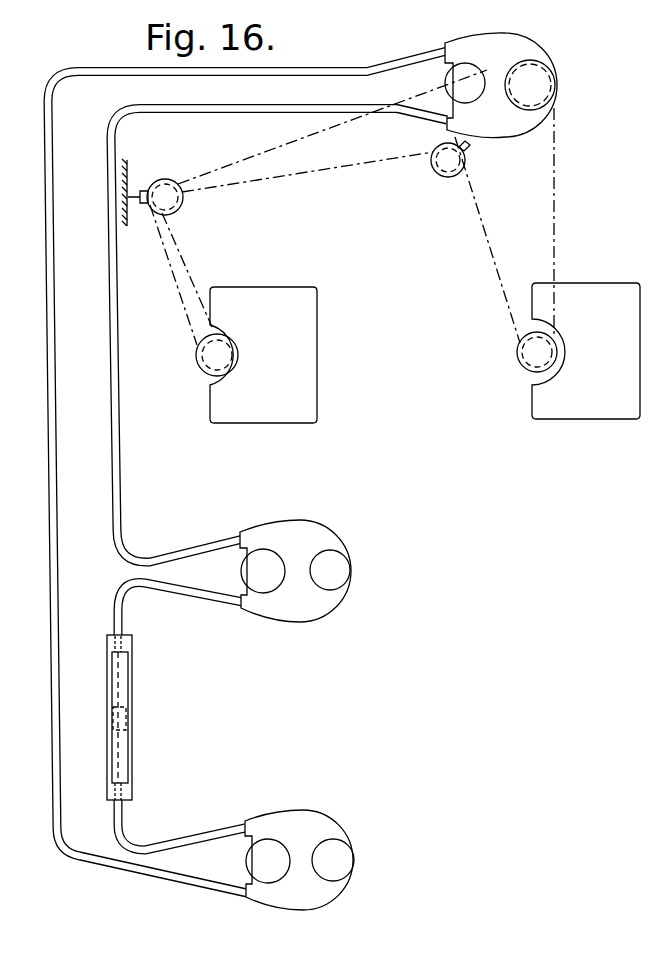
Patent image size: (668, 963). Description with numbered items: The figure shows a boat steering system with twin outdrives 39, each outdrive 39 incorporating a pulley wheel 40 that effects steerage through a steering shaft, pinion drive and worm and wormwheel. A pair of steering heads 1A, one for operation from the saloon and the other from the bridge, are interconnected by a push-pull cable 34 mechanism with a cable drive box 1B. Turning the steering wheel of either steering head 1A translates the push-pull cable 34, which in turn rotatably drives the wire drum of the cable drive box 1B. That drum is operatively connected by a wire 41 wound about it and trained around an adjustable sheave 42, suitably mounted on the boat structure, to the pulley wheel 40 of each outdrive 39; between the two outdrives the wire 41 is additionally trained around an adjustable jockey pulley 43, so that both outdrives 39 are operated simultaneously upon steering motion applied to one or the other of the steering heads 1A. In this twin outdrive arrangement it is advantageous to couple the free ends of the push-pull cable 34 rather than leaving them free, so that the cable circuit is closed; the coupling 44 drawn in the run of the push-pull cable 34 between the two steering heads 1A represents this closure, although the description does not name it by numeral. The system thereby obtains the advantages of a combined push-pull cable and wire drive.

The steering head 1A is at (332, 528).
The cable drive box 1B is at (540, 46).
The push-pull cable 34 is at (108, 412).
The outdrive 39 is at (320, 335).
The pulley wheel 40 is at (196, 356).
The wire 41 is at (338, 163).
The adjustable sheave 42 is at (183, 201).
The adjustable jockey pulley 43 is at (437, 180).
The valve 44 is at (132, 692).